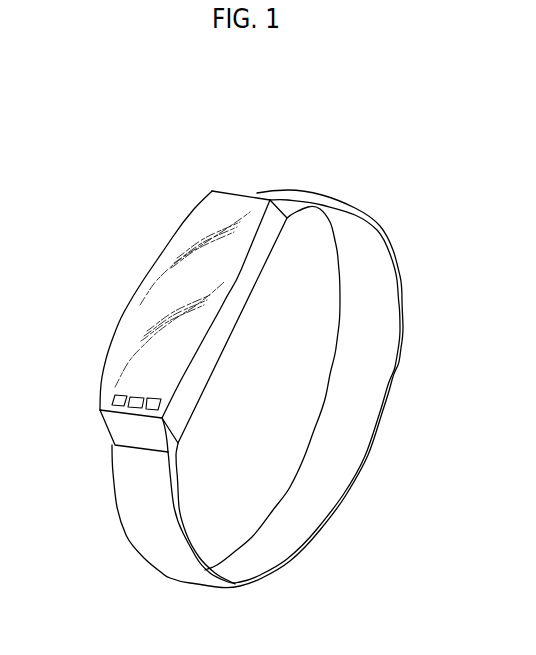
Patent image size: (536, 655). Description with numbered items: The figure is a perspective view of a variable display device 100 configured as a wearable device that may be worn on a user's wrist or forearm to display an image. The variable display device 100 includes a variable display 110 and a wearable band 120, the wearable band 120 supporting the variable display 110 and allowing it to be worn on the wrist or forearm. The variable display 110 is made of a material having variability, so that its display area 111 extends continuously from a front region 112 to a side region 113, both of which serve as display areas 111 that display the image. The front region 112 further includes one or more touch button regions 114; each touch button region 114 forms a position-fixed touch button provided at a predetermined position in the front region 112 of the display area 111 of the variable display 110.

The variable display device 100 is at (262, 124).
The variable display 110 is at (116, 314).
The display area 111 is at (116, 181).
The front region 112 is at (157, 272).
The side region 113 is at (243, 279).
The touch button region 114 is at (133, 407).
The wearable band 120 is at (375, 380).